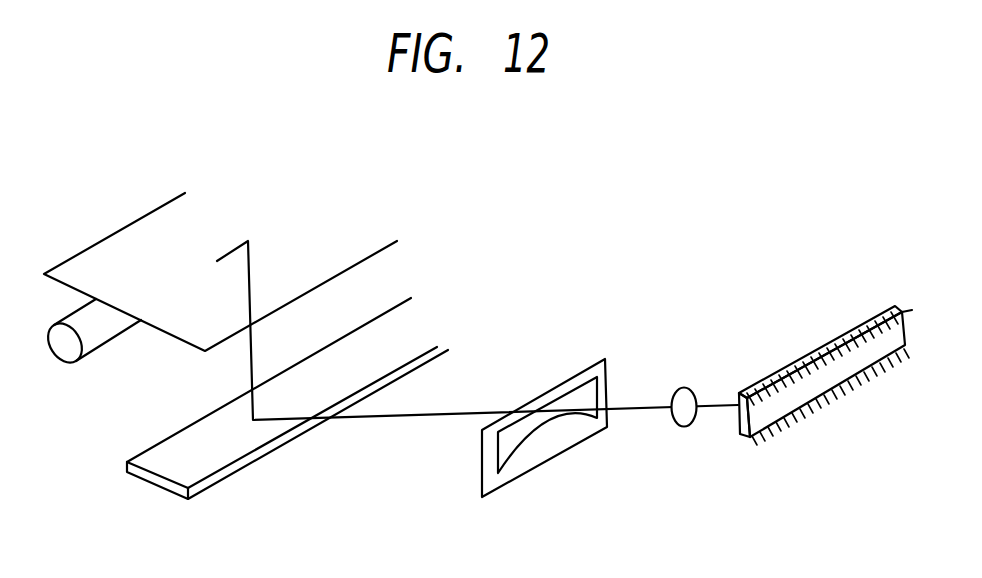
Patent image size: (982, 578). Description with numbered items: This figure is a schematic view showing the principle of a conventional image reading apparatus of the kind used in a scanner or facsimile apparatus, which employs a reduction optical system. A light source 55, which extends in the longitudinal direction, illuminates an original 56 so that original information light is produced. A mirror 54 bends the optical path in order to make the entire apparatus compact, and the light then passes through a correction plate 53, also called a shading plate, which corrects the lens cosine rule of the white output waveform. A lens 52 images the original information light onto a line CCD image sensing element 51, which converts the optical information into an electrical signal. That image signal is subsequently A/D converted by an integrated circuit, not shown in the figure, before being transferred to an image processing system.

The line CCD image sensing element 51 is at (793, 390).
The lens 52 is at (688, 386).
The correction plate 53 is at (550, 390).
The mirror 54 is at (218, 460).
The light source 55 is at (107, 333).
The original 56 is at (133, 240).